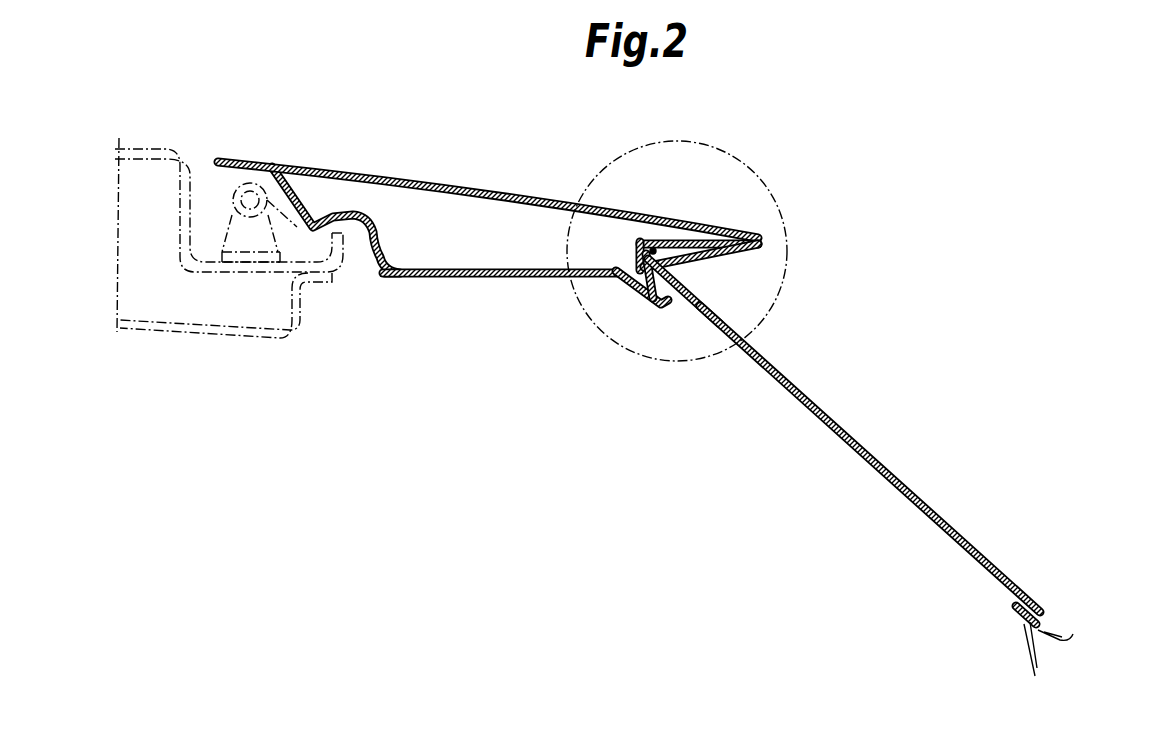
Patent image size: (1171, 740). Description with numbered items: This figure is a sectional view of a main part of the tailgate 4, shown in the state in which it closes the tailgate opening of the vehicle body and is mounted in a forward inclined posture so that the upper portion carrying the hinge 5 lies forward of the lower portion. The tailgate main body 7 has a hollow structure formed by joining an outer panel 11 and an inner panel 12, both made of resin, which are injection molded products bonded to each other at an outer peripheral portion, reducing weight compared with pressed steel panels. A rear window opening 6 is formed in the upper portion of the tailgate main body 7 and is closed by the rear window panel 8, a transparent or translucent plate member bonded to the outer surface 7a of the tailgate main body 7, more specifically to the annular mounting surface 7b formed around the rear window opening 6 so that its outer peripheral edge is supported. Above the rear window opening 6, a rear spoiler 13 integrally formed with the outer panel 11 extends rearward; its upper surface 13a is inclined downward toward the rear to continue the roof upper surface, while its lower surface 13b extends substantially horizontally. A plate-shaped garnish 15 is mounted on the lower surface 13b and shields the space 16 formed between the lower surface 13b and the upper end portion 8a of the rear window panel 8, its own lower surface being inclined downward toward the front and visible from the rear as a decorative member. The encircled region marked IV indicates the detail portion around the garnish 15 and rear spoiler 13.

The tailgate 4 is at (862, 175).
The hinge 5 is at (232, 187).
The rear window opening 6 is at (688, 307).
The tailgate main body 7 is at (454, 170).
The outer surface 7a is at (1056, 633).
The mounting surface 7b is at (668, 283).
The rear window panel 8 is at (844, 435).
The upper end portion 8a is at (663, 266).
The outer panel 11 is at (398, 175).
The inner panel 12 is at (421, 278).
The rear spoiler 13 is at (737, 185).
The upper surface 13a is at (698, 218).
The lower surface 13b is at (672, 252).
The garnish 15 is at (718, 262).
The space 16 is at (642, 245).
The section IV view indicator IV is at (763, 183).